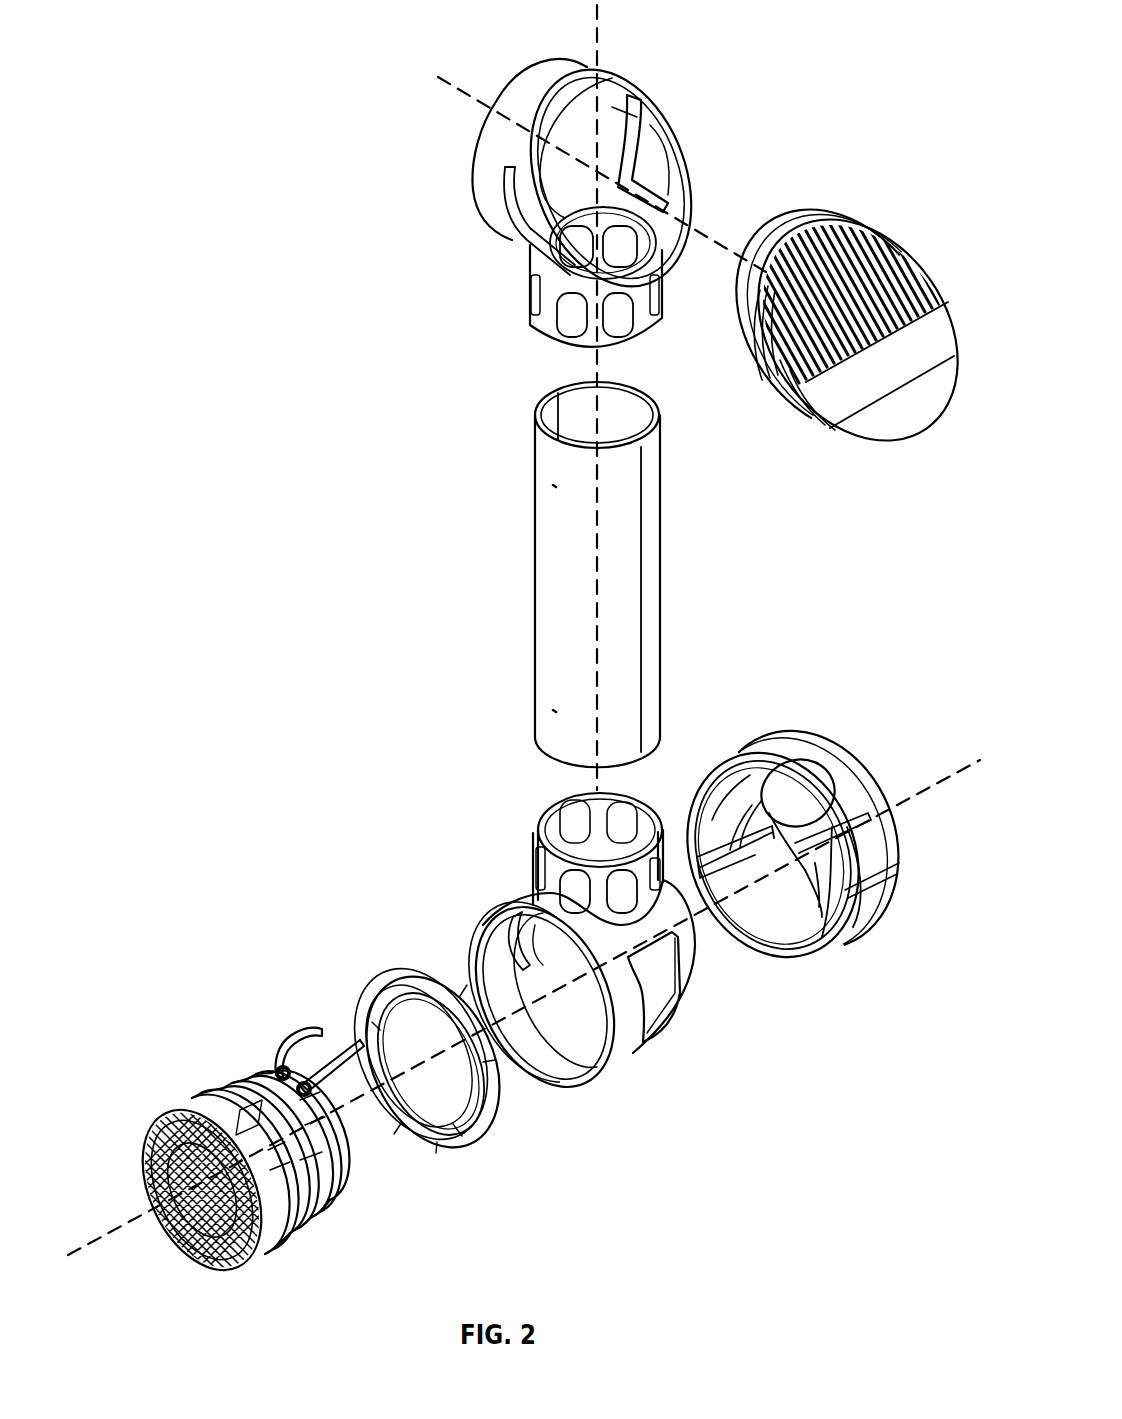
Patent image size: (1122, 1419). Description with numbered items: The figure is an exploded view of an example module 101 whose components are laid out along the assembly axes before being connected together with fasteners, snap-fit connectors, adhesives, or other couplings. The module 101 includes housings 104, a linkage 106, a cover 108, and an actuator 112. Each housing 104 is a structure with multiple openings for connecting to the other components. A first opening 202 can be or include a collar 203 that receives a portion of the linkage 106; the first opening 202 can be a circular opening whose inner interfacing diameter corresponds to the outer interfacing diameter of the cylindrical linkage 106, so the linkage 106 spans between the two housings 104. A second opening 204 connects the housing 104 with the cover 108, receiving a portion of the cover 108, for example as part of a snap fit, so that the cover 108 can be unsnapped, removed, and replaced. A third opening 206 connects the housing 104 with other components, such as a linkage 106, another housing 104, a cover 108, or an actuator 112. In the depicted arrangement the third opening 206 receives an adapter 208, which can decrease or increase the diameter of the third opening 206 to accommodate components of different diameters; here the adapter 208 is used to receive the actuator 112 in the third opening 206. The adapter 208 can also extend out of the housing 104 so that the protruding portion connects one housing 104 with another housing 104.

The module 101 is at (287, 55).
The housing 104 is at (574, 578).
The linkage 106 is at (537, 577).
The cover 108 is at (878, 429).
The actuator 112 is at (322, 1213).
The first opening 202 is at (546, 835).
The collar 203 is at (548, 326).
The second opening 204 is at (620, 162).
The third opening 206 is at (557, 974).
The adapter 208 is at (497, 1123).